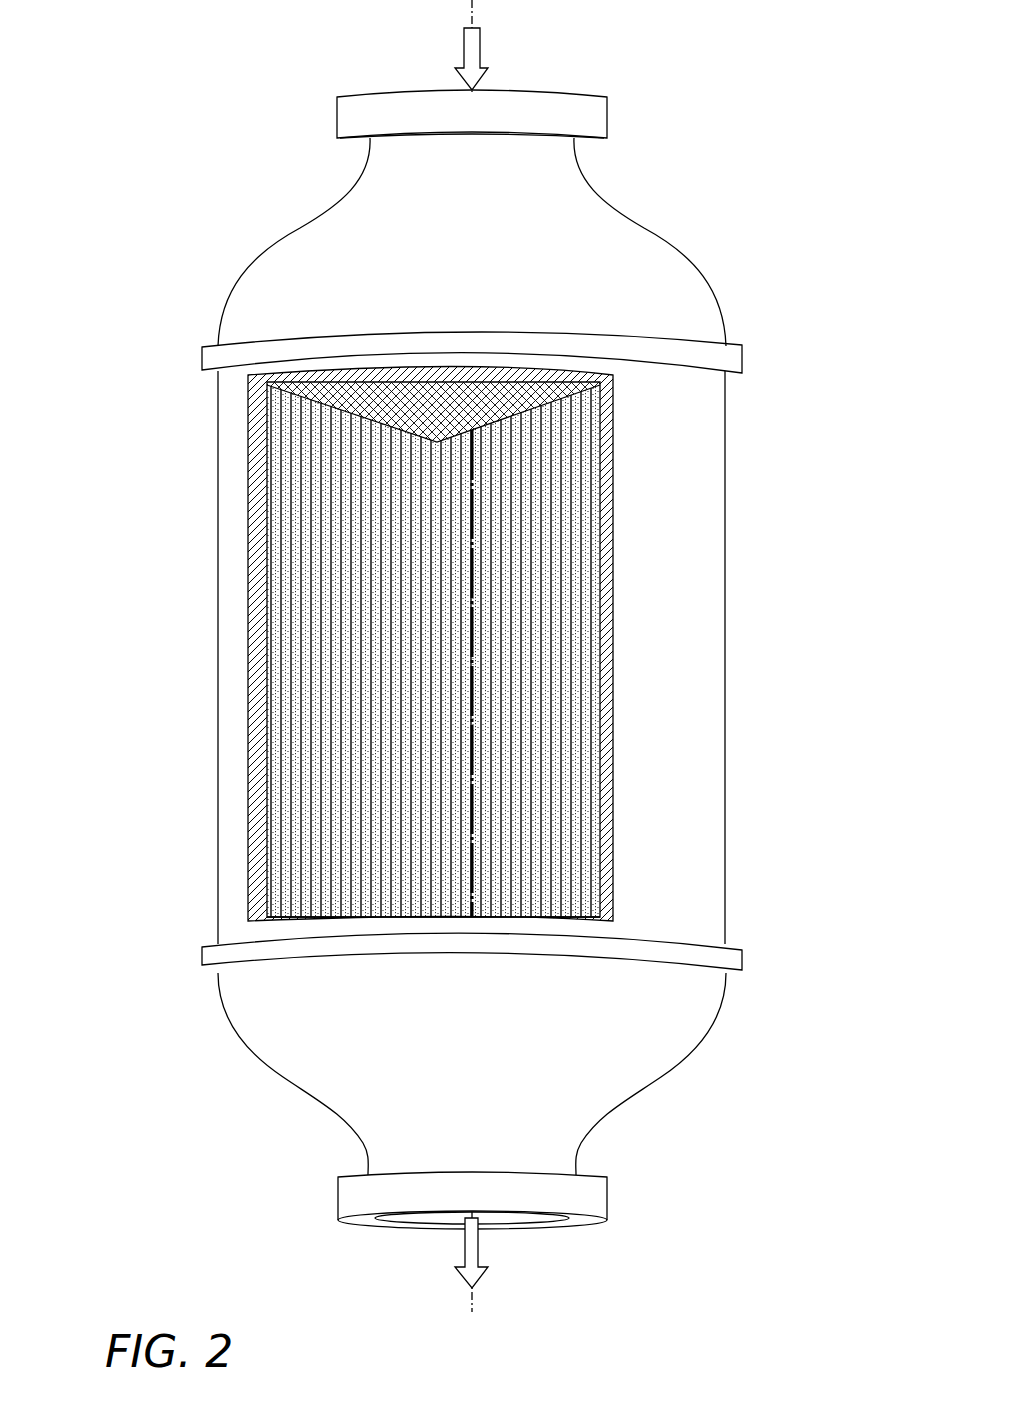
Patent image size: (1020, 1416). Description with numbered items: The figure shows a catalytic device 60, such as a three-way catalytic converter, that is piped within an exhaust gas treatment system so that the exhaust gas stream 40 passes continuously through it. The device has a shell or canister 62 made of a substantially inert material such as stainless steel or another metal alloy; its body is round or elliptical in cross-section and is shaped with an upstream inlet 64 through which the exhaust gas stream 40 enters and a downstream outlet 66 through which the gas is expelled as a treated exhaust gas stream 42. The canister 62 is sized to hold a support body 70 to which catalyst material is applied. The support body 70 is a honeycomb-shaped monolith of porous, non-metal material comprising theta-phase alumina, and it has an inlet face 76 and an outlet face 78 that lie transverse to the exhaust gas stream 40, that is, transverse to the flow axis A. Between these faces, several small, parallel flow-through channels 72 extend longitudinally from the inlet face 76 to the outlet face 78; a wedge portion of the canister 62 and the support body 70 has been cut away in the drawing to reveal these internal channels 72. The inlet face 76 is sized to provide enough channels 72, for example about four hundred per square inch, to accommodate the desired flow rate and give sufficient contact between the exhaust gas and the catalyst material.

The exhaust gas stream 40 is at (480, 50).
The treated exhaust gas stream 42 is at (480, 1247).
The catalytic device 60 is at (170, 226).
The shell or canister 62 is at (273, 240).
The upstream inlet 64 is at (375, 93).
The downstream outlet 66 is at (410, 1232).
The support body 70 is at (290, 593).
The flow-through channels 72 is at (308, 795).
The inlet face 76 is at (312, 398).
The outlet face 78 is at (330, 920).
The flow axis A is at (474, 617).